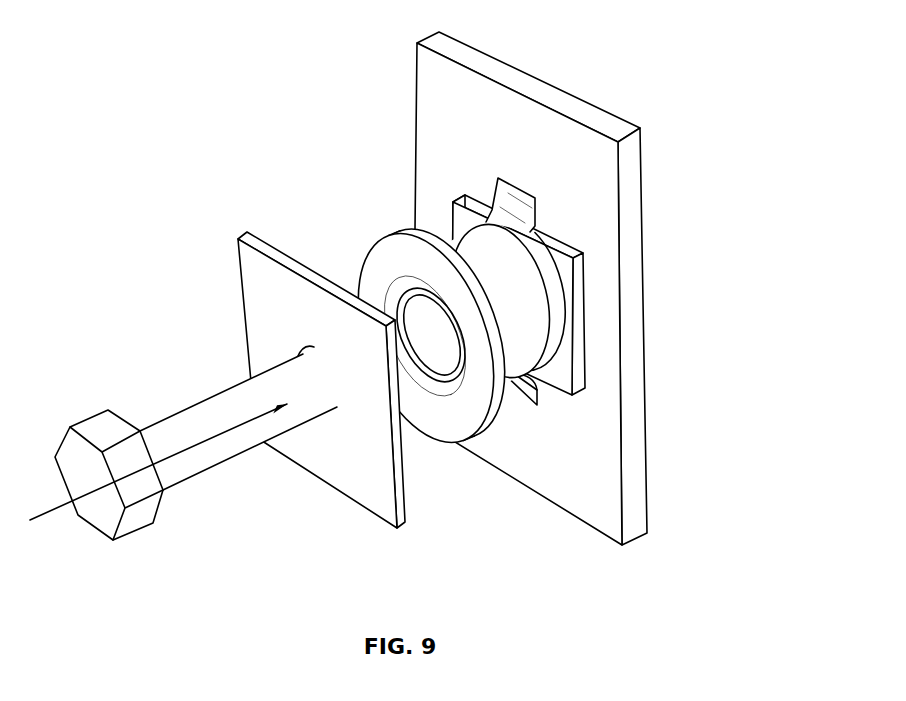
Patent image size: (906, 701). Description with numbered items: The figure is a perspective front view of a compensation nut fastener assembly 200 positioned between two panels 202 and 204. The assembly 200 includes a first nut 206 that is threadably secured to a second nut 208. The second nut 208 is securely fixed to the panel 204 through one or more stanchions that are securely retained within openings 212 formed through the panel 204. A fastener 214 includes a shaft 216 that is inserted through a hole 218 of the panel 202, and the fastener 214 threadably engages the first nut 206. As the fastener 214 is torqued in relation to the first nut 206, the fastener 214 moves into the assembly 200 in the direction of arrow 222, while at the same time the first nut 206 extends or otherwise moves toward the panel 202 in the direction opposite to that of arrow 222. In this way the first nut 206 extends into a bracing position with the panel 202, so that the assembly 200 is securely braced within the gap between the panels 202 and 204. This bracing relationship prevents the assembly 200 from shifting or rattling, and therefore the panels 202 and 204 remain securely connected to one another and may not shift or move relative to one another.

The compensation nut fastener assembly 200 is at (418, 228).
The panel 202 is at (248, 261).
The panel 204 is at (632, 165).
The first nut 206 is at (377, 247).
The second nut 208 is at (573, 322).
The openings 212 is at (520, 187).
The fastener 214 is at (172, 413).
The shaft 216 is at (222, 393).
The hole 218 is at (298, 352).
The arrow 222 is at (203, 468).